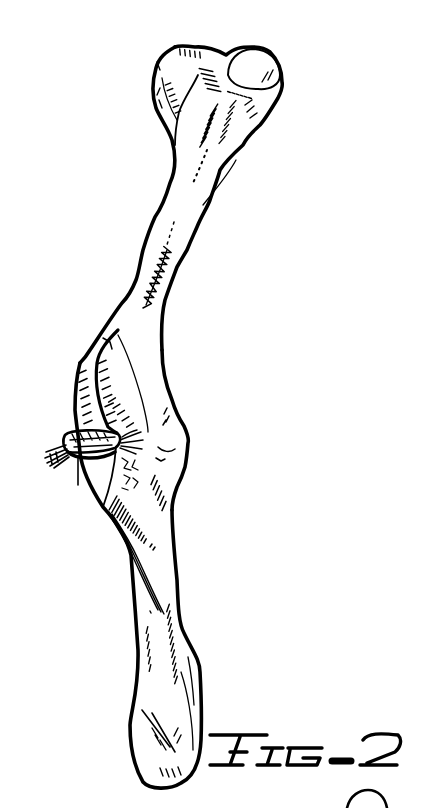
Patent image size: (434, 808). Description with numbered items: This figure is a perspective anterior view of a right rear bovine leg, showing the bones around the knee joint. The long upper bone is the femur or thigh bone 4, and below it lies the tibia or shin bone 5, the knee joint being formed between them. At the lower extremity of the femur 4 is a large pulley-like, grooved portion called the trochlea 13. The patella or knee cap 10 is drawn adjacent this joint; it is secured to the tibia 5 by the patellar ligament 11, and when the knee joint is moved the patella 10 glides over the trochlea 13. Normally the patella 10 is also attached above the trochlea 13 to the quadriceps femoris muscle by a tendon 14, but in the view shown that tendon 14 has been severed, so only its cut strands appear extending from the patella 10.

The femur 4 is at (188, 207).
The tibia 5 is at (167, 598).
The trochlea 13 is at (80, 365).
The patella 10 is at (65, 432).
The tendon 14 is at (63, 463).
The patellar ligament 11 is at (103, 507).